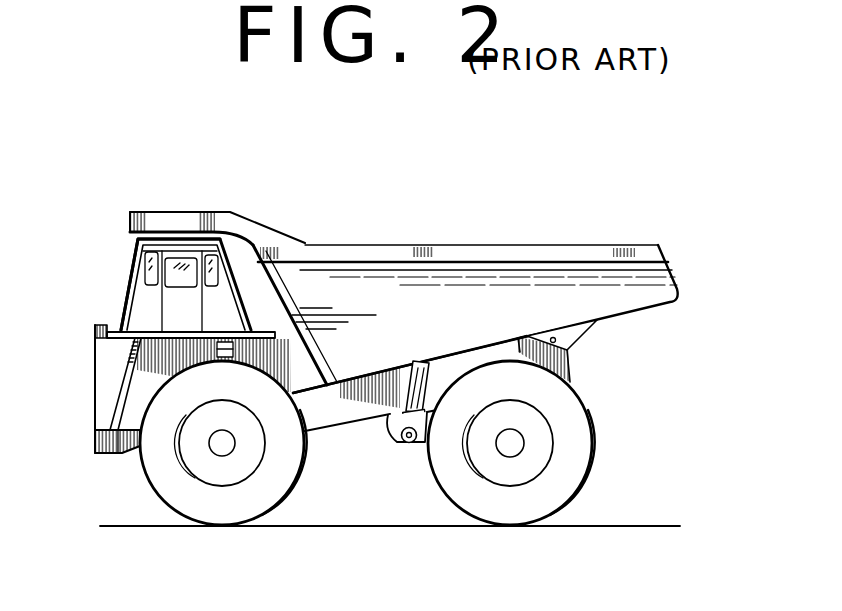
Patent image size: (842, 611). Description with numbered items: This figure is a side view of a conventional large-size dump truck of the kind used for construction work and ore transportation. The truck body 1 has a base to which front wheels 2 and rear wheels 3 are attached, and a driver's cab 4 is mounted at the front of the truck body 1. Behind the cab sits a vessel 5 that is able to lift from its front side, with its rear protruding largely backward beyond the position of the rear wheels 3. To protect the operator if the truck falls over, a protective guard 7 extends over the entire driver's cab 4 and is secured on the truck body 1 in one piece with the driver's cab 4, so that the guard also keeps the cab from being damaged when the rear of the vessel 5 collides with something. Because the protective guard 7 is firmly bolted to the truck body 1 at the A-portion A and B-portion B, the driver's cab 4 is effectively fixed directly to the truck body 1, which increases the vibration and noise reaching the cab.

The truck body 1 is at (328, 418).
The front wheels 2 is at (247, 500).
The rear wheels 3 is at (548, 497).
The driver's cab 4 is at (125, 322).
The vessel 5 is at (358, 292).
The protective guard 7 is at (135, 262).
The A-portion A is at (124, 389).
The B-portion B is at (242, 352).